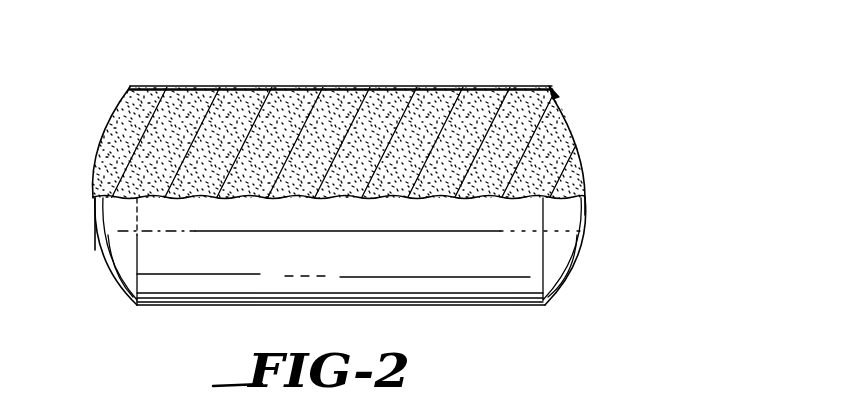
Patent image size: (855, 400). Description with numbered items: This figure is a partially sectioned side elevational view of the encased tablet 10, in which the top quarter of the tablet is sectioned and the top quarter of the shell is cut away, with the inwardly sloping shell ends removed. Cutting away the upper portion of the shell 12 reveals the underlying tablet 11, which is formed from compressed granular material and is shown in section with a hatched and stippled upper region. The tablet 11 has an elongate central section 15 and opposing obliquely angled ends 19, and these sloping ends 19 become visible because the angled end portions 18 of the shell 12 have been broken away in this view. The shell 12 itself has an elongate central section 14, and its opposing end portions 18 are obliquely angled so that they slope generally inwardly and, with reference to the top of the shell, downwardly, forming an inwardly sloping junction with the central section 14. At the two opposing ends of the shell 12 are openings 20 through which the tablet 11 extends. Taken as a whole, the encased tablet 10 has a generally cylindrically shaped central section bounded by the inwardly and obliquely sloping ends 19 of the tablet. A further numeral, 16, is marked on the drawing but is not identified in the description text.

The encased tablet 10 is at (451, 88).
The tablet 11 is at (96, 216).
The shell 12 is at (231, 86).
The elongate central section 14 is at (360, 259).
The elongate central section 15 is at (338, 140).
The end cap 16 is at (585, 163).
The end portions 18 is at (112, 280).
The ends 19 is at (112, 116).
The openings 20 is at (92, 197).